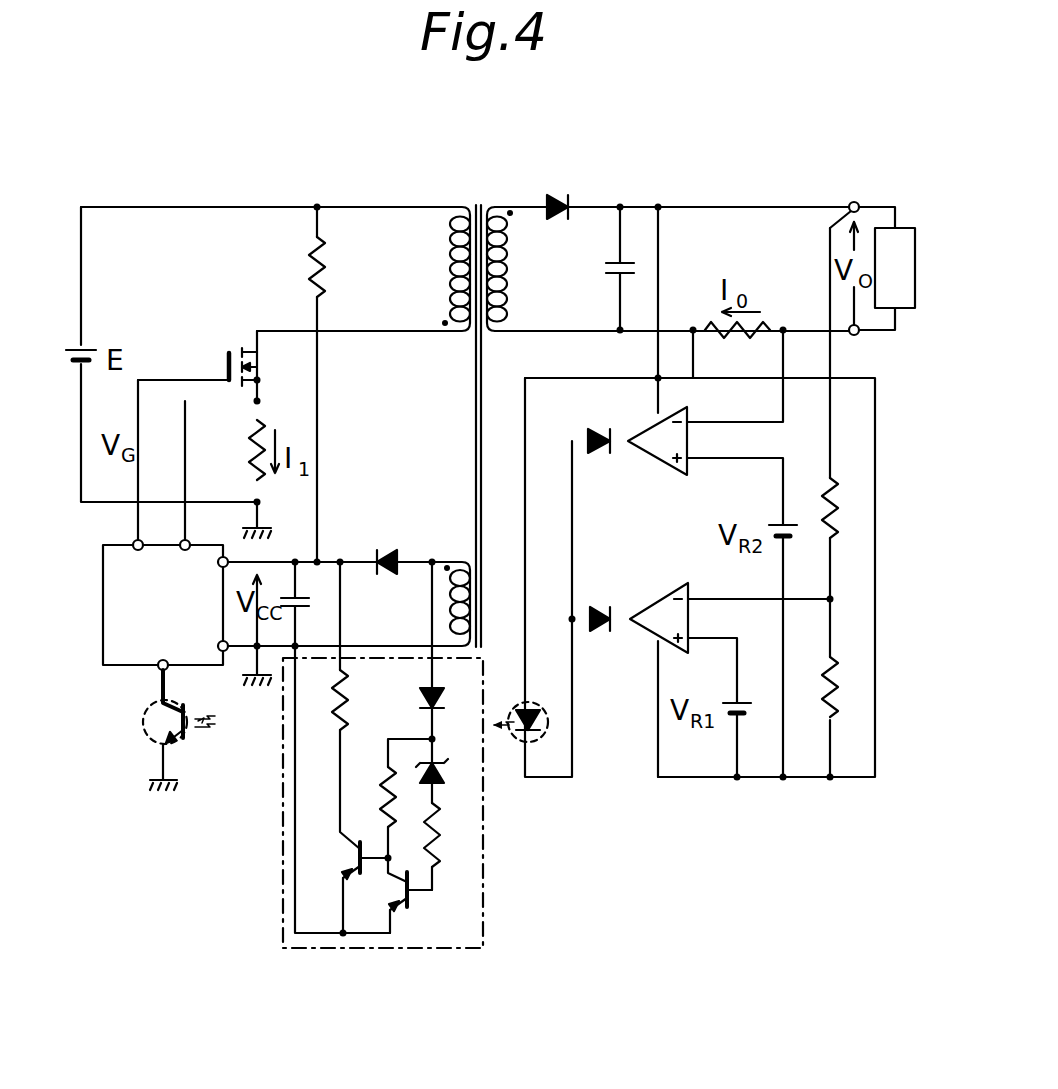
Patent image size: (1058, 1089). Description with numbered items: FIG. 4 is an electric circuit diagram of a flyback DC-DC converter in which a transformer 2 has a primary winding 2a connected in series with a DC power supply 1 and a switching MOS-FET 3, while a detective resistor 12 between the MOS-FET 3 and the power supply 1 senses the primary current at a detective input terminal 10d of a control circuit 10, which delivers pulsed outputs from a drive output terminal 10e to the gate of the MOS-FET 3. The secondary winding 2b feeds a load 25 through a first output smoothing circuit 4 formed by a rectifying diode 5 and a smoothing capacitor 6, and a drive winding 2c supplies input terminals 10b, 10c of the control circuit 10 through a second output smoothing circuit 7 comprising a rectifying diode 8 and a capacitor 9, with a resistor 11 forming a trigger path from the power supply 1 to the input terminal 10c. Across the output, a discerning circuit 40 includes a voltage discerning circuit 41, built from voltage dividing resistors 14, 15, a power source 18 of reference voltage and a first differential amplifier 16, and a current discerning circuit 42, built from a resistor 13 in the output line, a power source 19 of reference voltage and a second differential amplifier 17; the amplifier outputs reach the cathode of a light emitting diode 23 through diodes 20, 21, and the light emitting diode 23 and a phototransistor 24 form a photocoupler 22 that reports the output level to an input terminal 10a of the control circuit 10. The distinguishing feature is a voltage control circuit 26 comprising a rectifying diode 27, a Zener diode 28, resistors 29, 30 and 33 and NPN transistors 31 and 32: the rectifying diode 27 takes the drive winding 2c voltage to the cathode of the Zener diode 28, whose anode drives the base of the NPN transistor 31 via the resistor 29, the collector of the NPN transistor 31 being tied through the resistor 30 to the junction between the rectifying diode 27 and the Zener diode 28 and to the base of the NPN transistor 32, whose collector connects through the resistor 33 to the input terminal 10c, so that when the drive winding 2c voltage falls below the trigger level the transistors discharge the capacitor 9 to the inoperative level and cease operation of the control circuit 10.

The DC power supply 1 is at (76, 348).
The transformer 2 is at (478, 203).
The primary winding 2a is at (450, 270).
The secondary winding 2b is at (507, 285).
The drive winding 2c is at (462, 566).
The MOS-FET 3 is at (238, 352).
The first output smoothing circuit 4 is at (600, 196).
The rectifying diode 5 is at (554, 220).
The smoothing capacitor 6 is at (632, 270).
The second output smoothing circuit 7 is at (347, 548).
The rectifying diode 8 is at (386, 576).
The capacitor 9 is at (306, 606).
The control circuit 10 is at (128, 670).
The input terminal 10a is at (168, 668).
The input terminal 10b is at (218, 647).
The input terminal 10c is at (219, 567).
The detective input terminal 10d is at (182, 551).
The drive output terminal 10e is at (133, 541).
The resistor 11 is at (315, 264).
The detective resistor 12 is at (256, 448).
The resistor 13 is at (734, 335).
The voltage dividing resistor 14 is at (836, 490).
The voltage dividing resistor 15 is at (834, 670).
The first differential amplifier 16 is at (658, 600).
The second differential amplifier 17 is at (660, 462).
The power source of reference voltage 18 is at (748, 700).
The power source of reference voltage 19 is at (796, 520).
The diode 20 is at (598, 633).
The diode 21 is at (598, 436).
The photocoupler 22 is at (320, 737).
The light emitting diode 23 is at (522, 710).
The phototransistor 24 is at (150, 740).
The load 25 is at (896, 226).
The voltage control circuit 26 is at (488, 832).
The rectifying diode 27 is at (420, 698).
The Zener diode 28 is at (440, 780).
The resistor 29 is at (444, 848).
The resistor 30 is at (386, 792).
The NPN transistor 31 is at (414, 900).
The NPN transistor 32 is at (350, 874).
The resistor 33 is at (334, 716).
The discerning circuit 40 is at (750, 796).
The voltage discerning circuit 41 is at (635, 706).
The current discerning circuit 42 is at (672, 490).